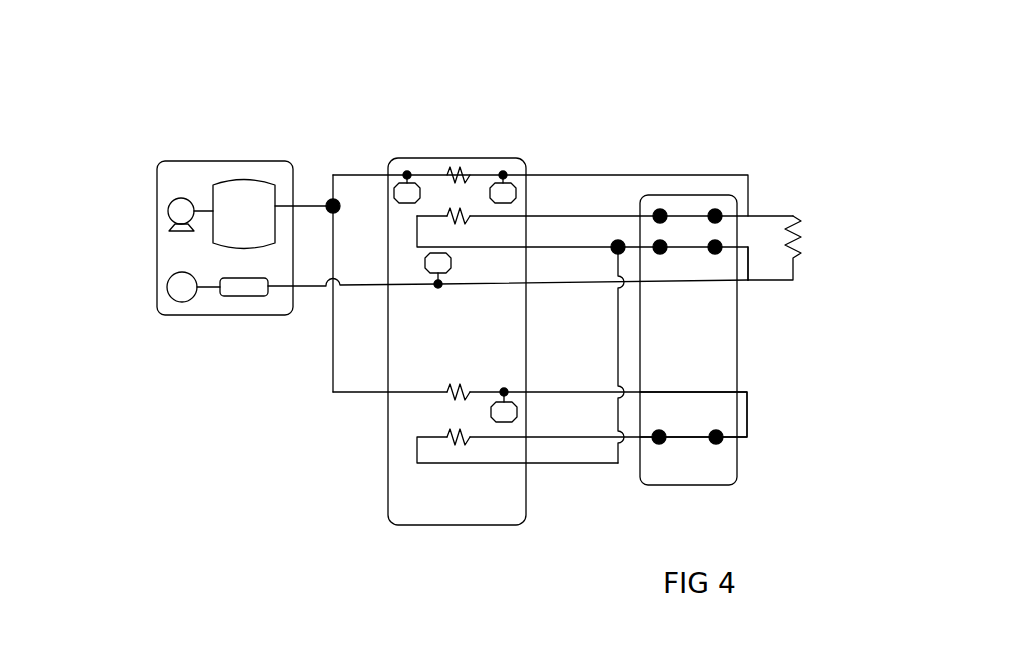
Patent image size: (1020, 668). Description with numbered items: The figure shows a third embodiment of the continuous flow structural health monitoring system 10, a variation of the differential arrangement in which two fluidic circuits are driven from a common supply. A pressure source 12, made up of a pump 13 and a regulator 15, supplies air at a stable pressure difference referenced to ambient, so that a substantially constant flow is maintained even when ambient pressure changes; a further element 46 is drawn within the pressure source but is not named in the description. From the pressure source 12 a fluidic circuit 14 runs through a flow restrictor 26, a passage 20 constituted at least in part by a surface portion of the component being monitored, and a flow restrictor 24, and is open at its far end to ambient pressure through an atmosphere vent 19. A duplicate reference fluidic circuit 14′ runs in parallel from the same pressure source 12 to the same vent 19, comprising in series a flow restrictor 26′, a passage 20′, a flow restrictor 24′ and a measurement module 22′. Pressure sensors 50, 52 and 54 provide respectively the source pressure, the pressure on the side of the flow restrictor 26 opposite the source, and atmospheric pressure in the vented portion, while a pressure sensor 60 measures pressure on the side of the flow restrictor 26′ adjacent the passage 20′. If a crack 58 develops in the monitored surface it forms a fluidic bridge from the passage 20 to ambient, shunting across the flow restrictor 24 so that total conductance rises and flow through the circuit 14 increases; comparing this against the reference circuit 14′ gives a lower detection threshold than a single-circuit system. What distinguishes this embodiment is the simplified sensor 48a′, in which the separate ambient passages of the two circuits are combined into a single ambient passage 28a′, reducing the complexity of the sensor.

The continuous flow structural health monitoring system 10 is at (805, 68).
The pressure source 12 is at (280, 158).
The pump 13 is at (168, 210).
The regulator 15 is at (245, 179).
The atmosphere vent 19 is at (168, 275).
The filter 46 is at (240, 298).
The measurement module 22′ is at (525, 165).
The pressure sensor 50 is at (398, 180).
The pressure sensor 52 is at (505, 195).
The pressure sensor 54 is at (425, 263).
The pressure sensor 60 is at (502, 412).
The flow restrictor 26 is at (460, 168).
The flow restrictor 24 is at (460, 216).
The flow restrictor 26′ is at (470, 390).
The flow restrictor 24′ is at (460, 440).
The fluidic circuit 14 is at (752, 154).
The reference fluidic circuit 14′ is at (752, 370).
The passage 20 is at (683, 216).
The passage 20′ is at (697, 433).
The single ambient passage 28a′ is at (687, 247).
The crack 58 is at (800, 247).
The simplified sensor 48a′ is at (737, 308).